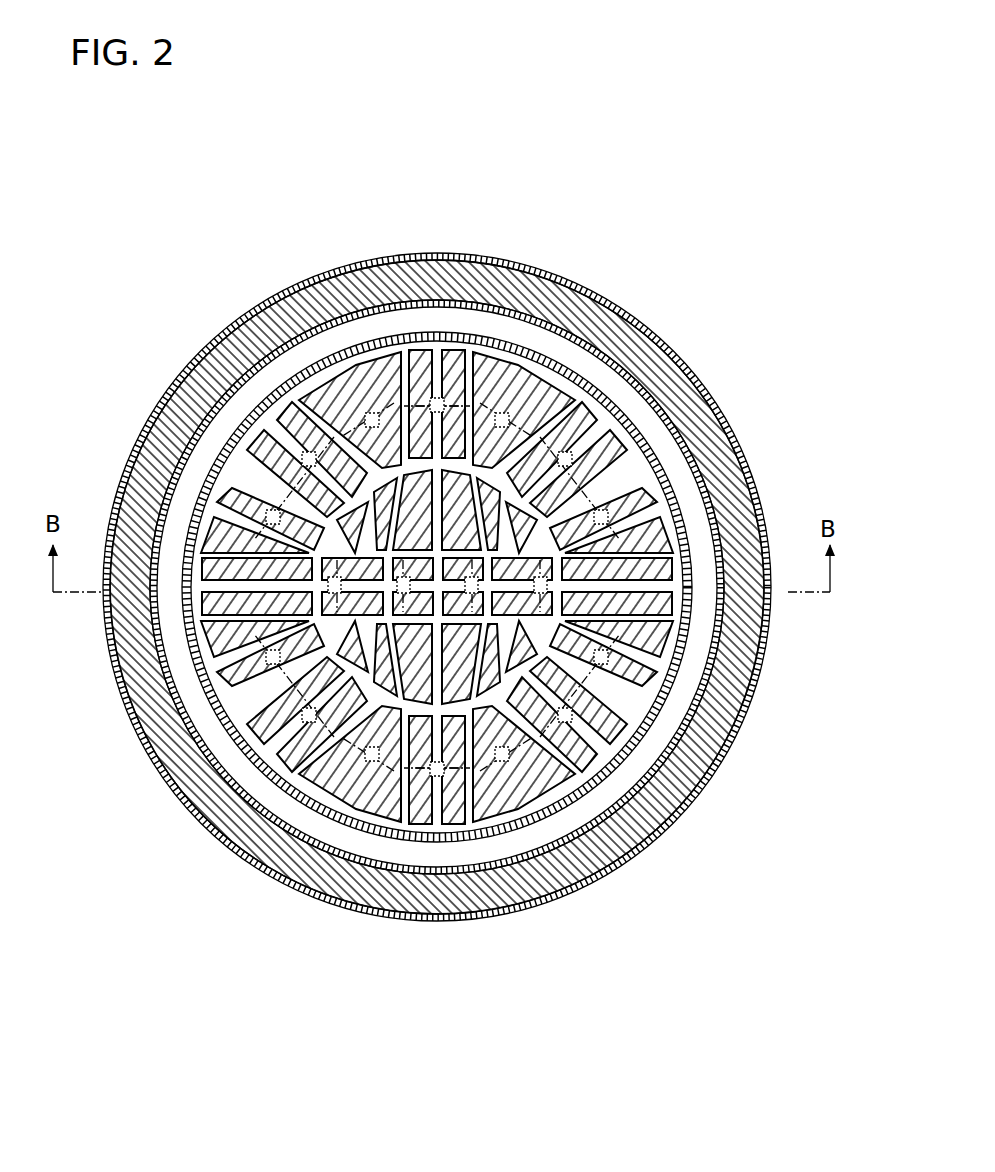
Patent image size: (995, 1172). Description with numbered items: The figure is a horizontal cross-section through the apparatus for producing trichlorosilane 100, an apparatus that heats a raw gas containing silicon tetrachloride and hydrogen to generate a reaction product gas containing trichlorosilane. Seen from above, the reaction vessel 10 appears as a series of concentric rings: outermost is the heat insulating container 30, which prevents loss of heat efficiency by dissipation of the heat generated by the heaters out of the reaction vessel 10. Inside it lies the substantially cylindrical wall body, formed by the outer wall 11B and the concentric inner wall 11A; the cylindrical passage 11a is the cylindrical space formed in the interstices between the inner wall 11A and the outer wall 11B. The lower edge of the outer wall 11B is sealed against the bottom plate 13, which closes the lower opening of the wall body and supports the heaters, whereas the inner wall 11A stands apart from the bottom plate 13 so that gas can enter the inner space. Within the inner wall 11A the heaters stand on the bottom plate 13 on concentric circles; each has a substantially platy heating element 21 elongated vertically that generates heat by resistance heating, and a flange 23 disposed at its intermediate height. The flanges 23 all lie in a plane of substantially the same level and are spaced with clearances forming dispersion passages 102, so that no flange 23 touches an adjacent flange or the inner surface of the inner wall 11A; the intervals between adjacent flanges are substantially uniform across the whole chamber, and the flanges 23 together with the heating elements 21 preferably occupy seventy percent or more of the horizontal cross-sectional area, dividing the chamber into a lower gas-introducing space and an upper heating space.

The apparatus for producing trichlorosilane 100 is at (275, 240).
The reaction vessel 10 is at (280, 882).
The inner wall 11A is at (603, 310).
The outer wall 11B is at (480, 262).
The cylindrical passage 11a is at (670, 360).
The bottom plate 13 is at (247, 373).
The heat insulating container 30 is at (370, 265).
The dispersion passages 102 is at (662, 758).
The heating element 21 is at (197, 488).
The flange 23 is at (247, 473).